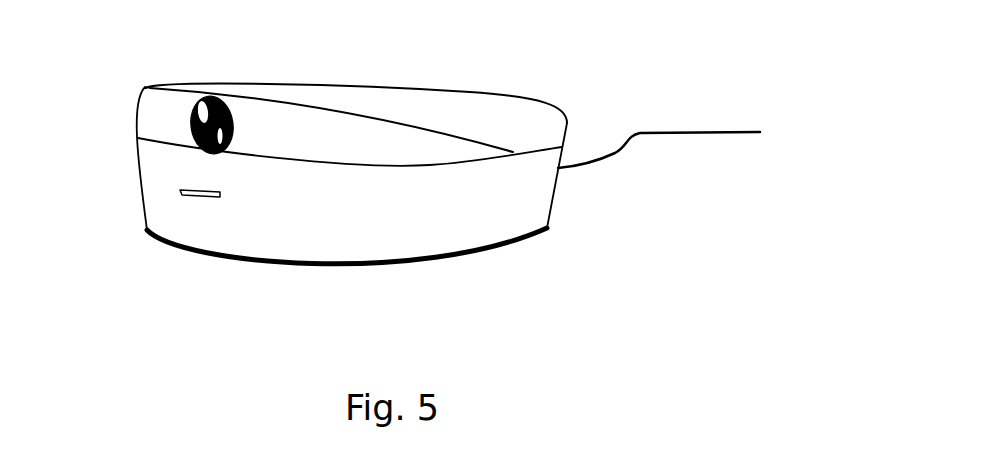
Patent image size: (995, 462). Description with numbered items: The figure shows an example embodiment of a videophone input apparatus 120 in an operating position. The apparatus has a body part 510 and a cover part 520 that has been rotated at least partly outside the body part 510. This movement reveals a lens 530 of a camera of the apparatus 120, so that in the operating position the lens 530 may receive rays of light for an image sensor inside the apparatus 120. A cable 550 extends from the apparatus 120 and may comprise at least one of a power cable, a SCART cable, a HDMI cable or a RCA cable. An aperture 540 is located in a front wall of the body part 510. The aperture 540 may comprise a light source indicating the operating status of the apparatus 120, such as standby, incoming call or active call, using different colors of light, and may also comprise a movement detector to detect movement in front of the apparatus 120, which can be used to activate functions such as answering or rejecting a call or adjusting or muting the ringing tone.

The videophone input apparatus 120 is at (229, 34).
The body part 510 is at (550, 208).
The cover part 520 is at (150, 88).
The lens 530 is at (235, 138).
The aperture 540 is at (220, 197).
The cable 550 is at (690, 132).